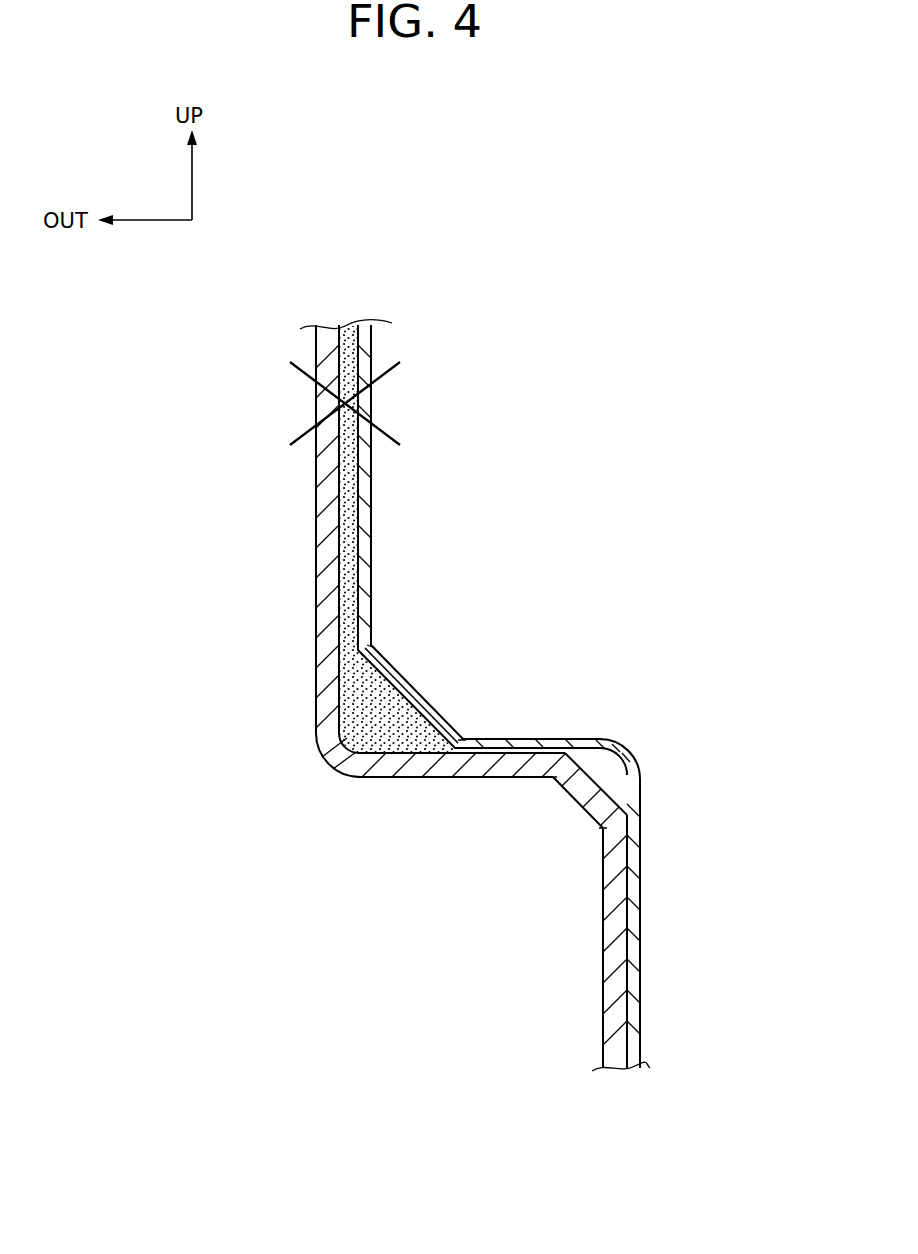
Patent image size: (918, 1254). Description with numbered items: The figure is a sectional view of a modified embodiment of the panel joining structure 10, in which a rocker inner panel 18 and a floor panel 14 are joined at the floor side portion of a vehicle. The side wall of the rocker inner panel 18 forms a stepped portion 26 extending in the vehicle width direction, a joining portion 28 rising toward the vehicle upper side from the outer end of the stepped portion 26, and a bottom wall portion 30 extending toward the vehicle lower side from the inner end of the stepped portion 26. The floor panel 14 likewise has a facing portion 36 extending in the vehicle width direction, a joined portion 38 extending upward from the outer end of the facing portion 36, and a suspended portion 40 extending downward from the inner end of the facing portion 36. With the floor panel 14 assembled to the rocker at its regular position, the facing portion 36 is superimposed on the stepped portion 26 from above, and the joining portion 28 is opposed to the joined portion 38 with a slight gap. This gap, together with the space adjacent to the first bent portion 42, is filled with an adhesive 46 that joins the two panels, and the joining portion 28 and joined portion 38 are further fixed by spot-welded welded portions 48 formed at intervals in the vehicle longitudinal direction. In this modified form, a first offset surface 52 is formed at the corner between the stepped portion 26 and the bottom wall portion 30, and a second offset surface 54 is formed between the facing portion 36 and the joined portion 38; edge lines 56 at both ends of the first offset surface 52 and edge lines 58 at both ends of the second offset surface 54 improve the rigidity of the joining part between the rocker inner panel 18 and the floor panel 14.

The panel joining structure 10 is at (572, 336).
The floor panel 14 is at (382, 348).
The rocker inner panel 18 is at (305, 352).
The stepped portion 26 is at (443, 780).
The joining portion 28 is at (315, 541).
The bottom wall portion 30 is at (603, 990).
The facing portion 36 is at (533, 740).
The joined portion 38 is at (373, 541).
The suspended portion 40 is at (642, 978).
The first bent portion 42 is at (328, 766).
The adhesive 46 is at (339, 652).
The welded portion 48 is at (292, 440).
The first offset surface 52 is at (565, 810).
The second offset surface 54 is at (412, 690).
The edge lines 56 is at (553, 780).
The edge lines 58 is at (376, 649).